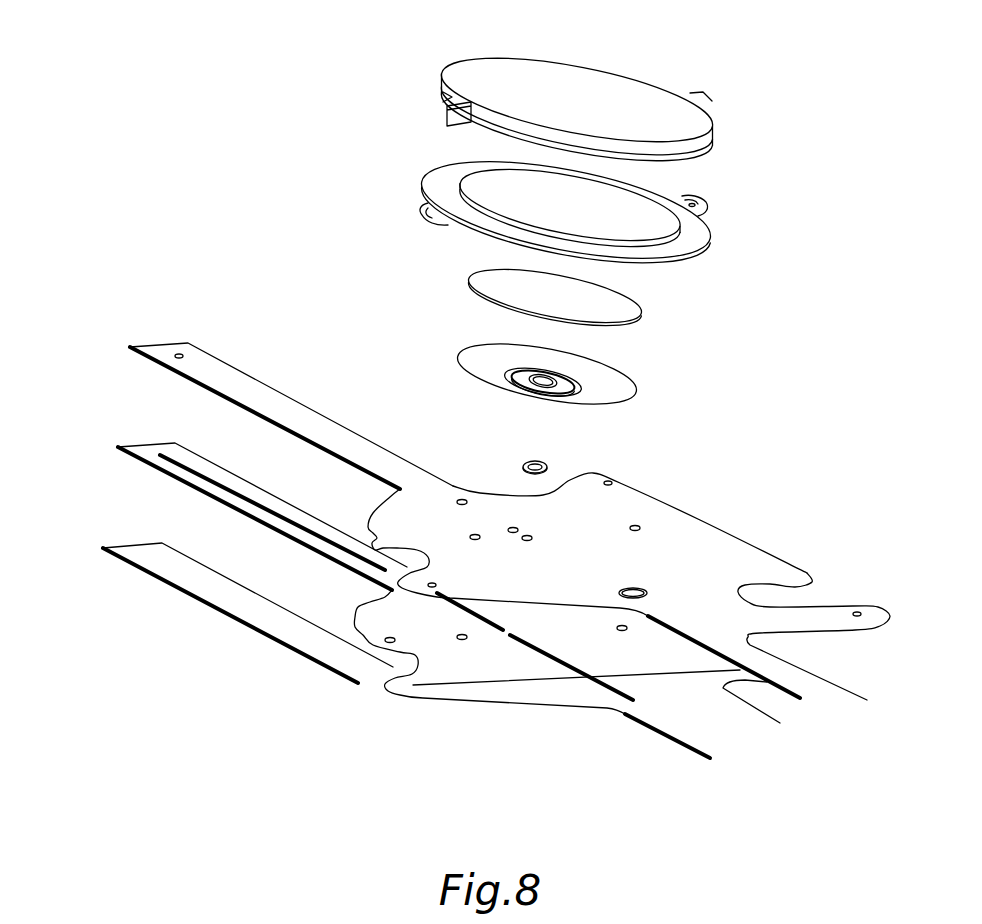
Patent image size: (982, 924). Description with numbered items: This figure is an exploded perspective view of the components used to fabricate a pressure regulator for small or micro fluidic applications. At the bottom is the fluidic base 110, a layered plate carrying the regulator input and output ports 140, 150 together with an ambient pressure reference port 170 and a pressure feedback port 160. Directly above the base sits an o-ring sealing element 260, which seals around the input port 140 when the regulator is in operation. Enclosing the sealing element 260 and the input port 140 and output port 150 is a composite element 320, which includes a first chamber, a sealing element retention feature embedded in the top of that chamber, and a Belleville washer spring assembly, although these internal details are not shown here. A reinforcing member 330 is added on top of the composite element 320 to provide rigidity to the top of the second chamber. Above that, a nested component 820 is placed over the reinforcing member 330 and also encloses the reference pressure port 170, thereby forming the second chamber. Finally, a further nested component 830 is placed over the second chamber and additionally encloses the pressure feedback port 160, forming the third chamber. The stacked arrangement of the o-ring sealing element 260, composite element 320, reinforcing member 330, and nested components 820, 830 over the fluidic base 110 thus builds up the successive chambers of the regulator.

The nested component 830 is at (633, 72).
The nested component 820 is at (712, 213).
The reinforcing member 330 is at (625, 310).
The composite element 320 is at (612, 388).
The o-ring sealing element 260 is at (535, 460).
The fluidic base 110 is at (92, 335).
The pressure feedback port 160 is at (462, 502).
The regulator input port 140 is at (513, 530).
The regulator output port 150 is at (527, 538).
The ambient pressure reference port 170 is at (635, 528).